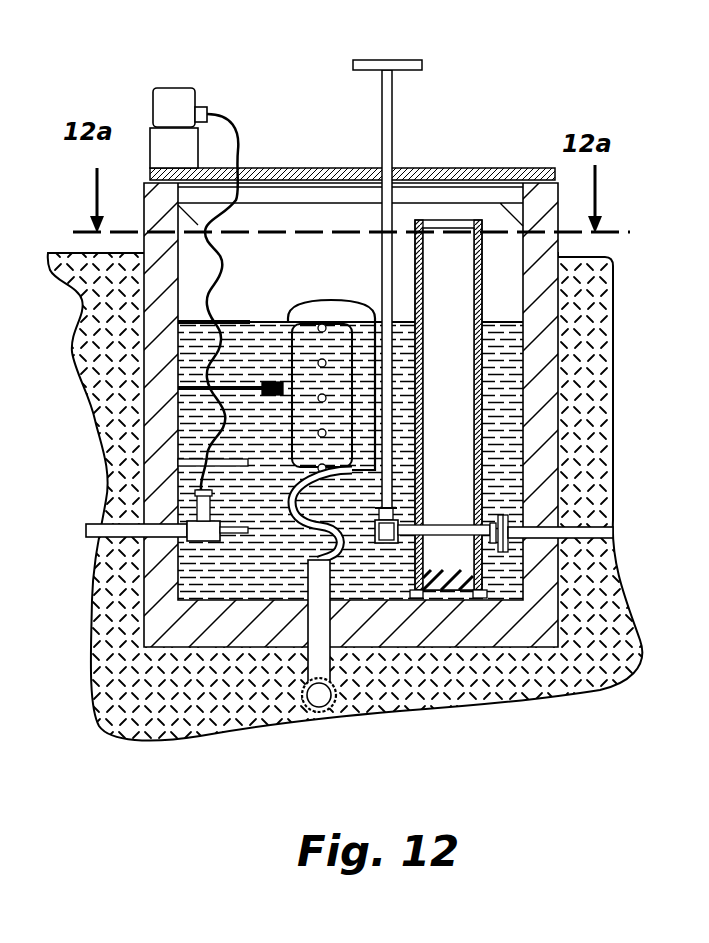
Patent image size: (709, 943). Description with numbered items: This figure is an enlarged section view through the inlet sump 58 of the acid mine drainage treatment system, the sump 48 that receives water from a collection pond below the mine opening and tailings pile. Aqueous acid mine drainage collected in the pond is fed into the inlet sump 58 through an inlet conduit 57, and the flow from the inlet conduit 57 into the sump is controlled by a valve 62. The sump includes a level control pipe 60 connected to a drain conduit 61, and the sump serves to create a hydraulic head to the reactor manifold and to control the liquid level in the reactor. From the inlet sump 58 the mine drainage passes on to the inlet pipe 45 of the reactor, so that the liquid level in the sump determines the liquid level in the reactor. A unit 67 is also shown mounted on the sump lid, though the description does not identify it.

The inlet pipe 45 is at (86, 531).
The sump 48 is at (436, 158).
The inlet conduit 57 is at (614, 532).
The inlet sump 58 is at (552, 247).
The level control pipe 60 is at (288, 300).
The drain conduit 61 is at (320, 698).
The valve 62 is at (383, 545).
The sensor unit 67 is at (180, 105).